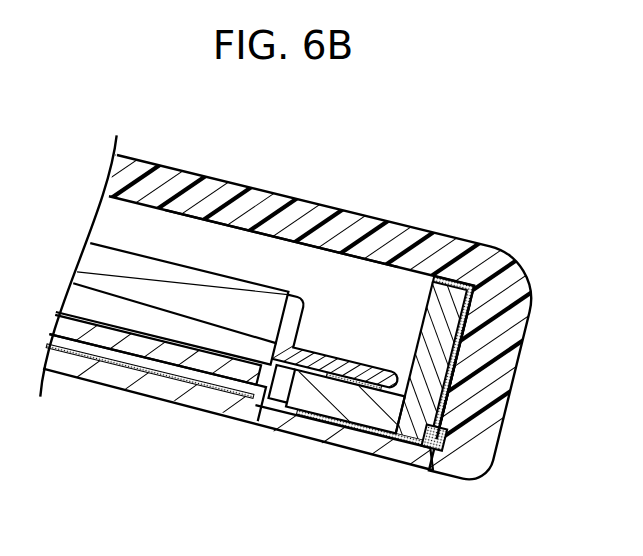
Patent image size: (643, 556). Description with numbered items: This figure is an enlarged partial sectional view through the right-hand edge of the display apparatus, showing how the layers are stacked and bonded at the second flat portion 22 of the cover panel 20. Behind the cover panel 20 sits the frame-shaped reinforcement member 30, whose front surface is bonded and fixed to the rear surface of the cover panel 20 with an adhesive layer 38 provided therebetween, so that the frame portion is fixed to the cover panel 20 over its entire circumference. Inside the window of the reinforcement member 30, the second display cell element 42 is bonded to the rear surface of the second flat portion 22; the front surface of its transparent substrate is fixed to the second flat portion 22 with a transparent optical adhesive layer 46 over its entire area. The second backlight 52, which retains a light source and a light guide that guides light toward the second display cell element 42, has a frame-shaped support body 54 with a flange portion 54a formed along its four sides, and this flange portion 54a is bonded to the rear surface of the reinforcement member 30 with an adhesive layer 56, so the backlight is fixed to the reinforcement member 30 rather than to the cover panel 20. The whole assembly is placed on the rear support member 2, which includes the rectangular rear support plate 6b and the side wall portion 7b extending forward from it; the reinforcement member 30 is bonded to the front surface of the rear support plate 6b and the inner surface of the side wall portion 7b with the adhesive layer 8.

The rear support member 2 is at (207, 192).
The rear support plate 6b is at (246, 232).
The second backlight 52 is at (131, 252).
The support body 54 is at (298, 312).
The flange portion 54a is at (353, 358).
The reinforcement member 30 is at (418, 310).
The adhesive layer 8 is at (462, 350).
The side wall portion 7b is at (464, 382).
The cover panel 20 is at (76, 377).
The second display cell element 42 is at (146, 352).
The transparent optical adhesive layer 46 is at (202, 386).
The second flat portion 22 is at (244, 408).
The adhesive layer 56 is at (330, 410).
The adhesive layer 38 is at (372, 430).